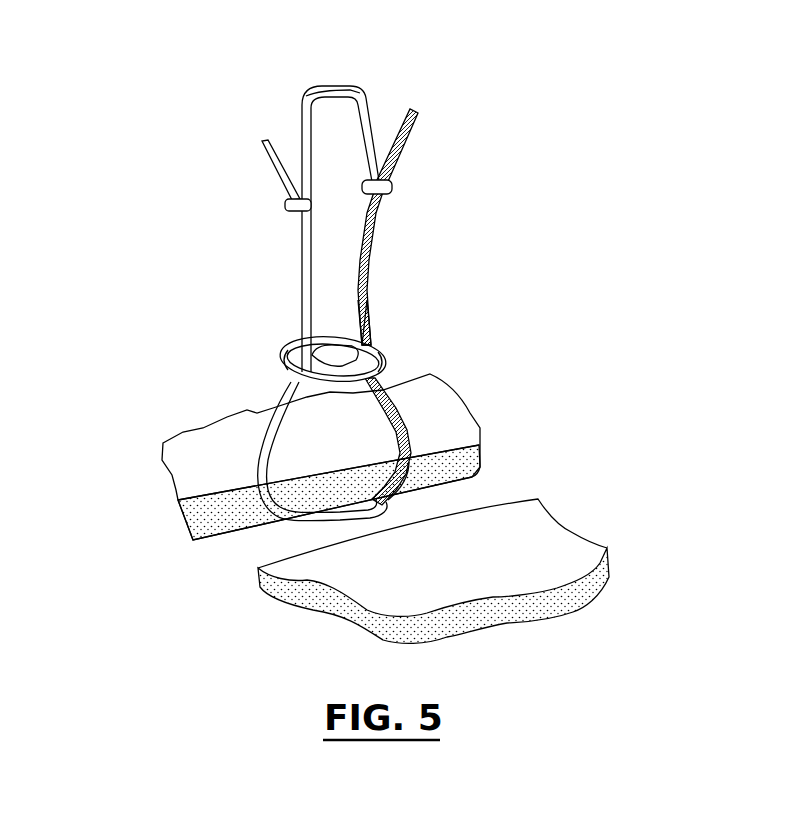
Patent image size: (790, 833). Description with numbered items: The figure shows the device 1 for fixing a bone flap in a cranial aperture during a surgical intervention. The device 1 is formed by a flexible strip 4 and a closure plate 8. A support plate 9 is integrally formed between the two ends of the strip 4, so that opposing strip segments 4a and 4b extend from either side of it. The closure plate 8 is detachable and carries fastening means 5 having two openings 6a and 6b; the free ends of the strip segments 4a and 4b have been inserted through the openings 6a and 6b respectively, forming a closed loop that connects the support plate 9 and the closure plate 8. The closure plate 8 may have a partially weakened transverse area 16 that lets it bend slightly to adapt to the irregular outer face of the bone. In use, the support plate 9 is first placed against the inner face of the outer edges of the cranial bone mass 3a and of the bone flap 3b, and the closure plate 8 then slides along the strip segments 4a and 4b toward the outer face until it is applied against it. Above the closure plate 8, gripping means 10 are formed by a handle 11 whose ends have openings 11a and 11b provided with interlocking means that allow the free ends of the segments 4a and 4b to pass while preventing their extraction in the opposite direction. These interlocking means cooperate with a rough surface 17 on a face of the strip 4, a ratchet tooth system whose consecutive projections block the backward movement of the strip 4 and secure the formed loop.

The device 1 is at (115, 172).
The cranial bone mass 3a is at (215, 458).
The bone flap 3b is at (517, 534).
The strip 4 is at (340, 477).
The strip segment 4a is at (275, 428).
The strip segment 4b is at (405, 420).
The fastening means 5 is at (324, 300).
The opening 6a is at (284, 360).
The opening 6b is at (373, 350).
The closure plate 8 is at (343, 340).
The support plate 9 is at (357, 500).
The gripping means 10 is at (345, 182).
The handle 11 is at (325, 85).
The opening 11a is at (287, 207).
The opening 11b is at (385, 183).
The partially weakened transverse area 16 is at (312, 362).
The rough surface 17 is at (380, 472).